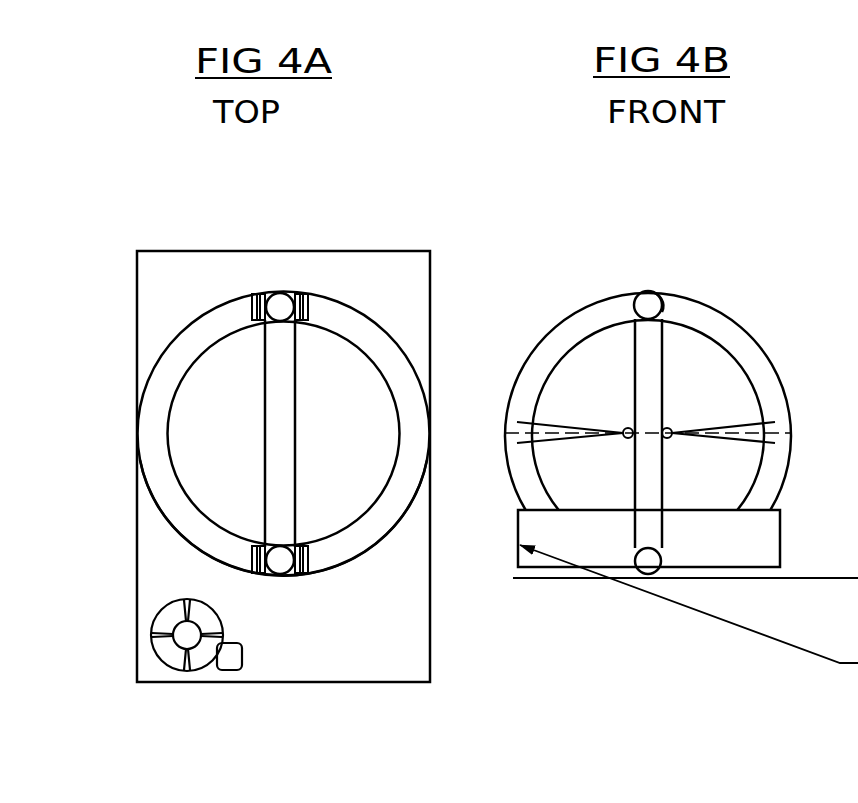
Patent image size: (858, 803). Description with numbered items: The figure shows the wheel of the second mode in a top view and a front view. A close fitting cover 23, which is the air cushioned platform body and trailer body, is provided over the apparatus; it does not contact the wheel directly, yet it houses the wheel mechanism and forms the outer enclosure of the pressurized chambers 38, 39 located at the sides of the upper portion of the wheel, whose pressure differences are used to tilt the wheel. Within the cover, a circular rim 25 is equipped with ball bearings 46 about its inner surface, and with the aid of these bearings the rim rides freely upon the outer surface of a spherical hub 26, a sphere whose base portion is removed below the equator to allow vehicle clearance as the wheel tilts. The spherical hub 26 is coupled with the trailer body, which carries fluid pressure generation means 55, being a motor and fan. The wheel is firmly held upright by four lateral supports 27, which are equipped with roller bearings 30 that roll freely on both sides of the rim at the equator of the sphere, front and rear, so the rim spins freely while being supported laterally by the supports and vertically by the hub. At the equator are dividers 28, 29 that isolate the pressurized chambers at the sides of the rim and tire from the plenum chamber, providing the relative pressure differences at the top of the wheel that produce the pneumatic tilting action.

In FIG. 4A, the cover 23 is at (328, 298).
In FIG. 4B, the circular rim 25 is at (635, 313).
In FIG. 4A, the spherical hub 26 is at (190, 395).
In FIG. 4A, the lateral supports 27 is at (248, 318).
In FIG. 4B, the lateral supports 27 is at (582, 427).
In FIG. 4B, the divider 28 is at (571, 440).
In FIG. 4B, the divider 29 is at (696, 440).
In FIG. 4A, the roller bearings 30 is at (248, 304).
In FIG. 4B, the roller bearings 30 is at (673, 430).
In FIG. 4A, the pressurized chamber 38 is at (192, 332).
In FIG. 4A, the pressurized chamber 39 is at (220, 552).
In FIG. 4B, the ball bearings 46 is at (662, 317).
In FIG. 4A, the fluid pressure generation means 55 is at (187, 662).